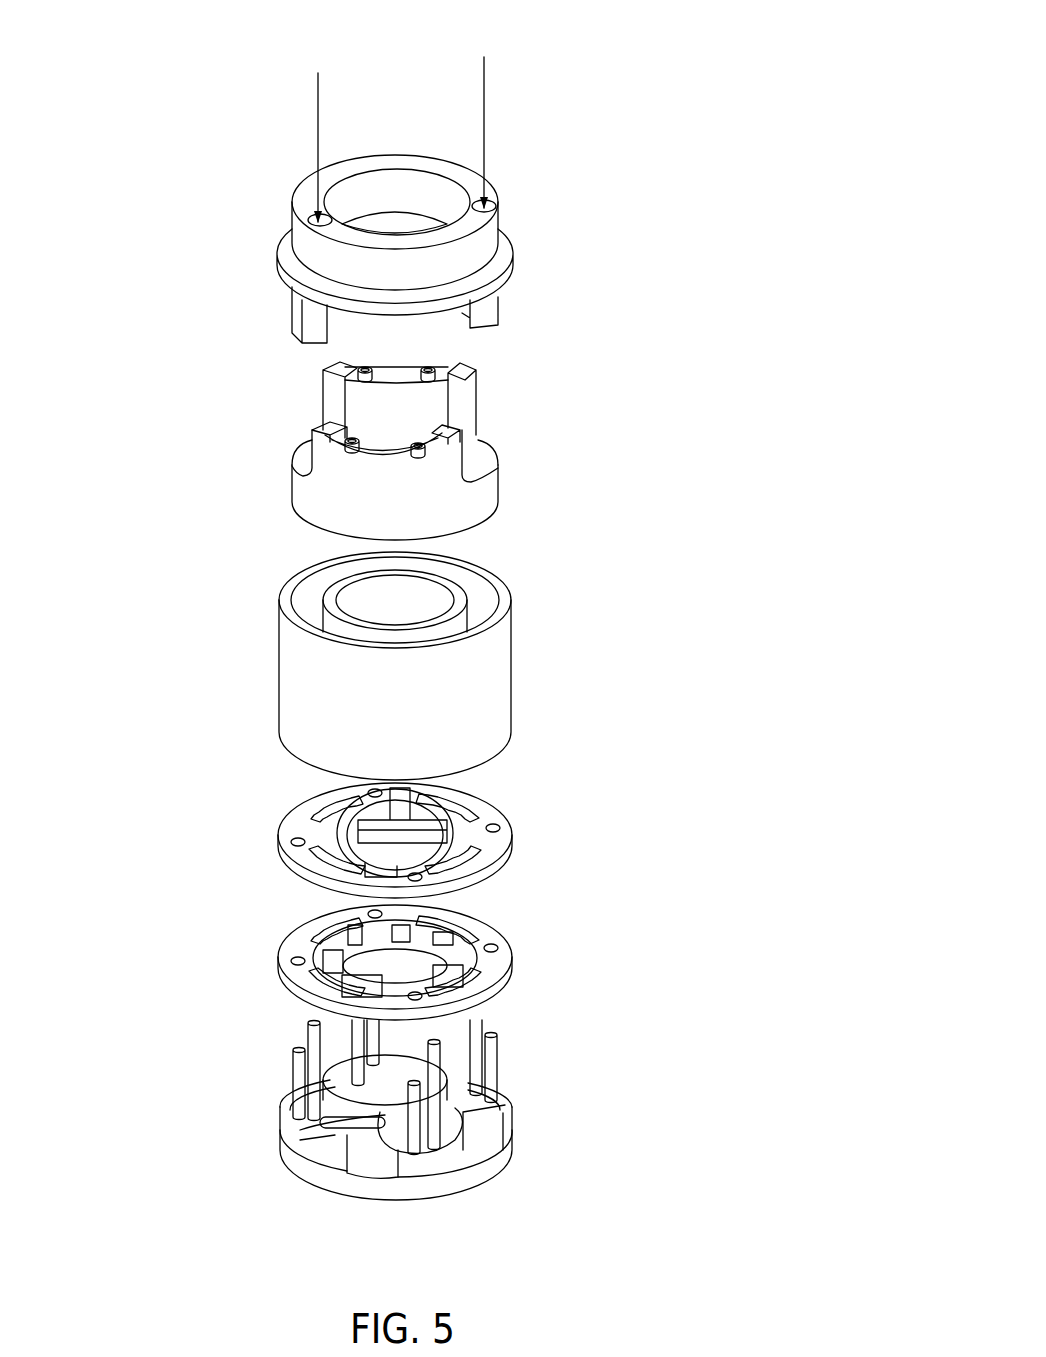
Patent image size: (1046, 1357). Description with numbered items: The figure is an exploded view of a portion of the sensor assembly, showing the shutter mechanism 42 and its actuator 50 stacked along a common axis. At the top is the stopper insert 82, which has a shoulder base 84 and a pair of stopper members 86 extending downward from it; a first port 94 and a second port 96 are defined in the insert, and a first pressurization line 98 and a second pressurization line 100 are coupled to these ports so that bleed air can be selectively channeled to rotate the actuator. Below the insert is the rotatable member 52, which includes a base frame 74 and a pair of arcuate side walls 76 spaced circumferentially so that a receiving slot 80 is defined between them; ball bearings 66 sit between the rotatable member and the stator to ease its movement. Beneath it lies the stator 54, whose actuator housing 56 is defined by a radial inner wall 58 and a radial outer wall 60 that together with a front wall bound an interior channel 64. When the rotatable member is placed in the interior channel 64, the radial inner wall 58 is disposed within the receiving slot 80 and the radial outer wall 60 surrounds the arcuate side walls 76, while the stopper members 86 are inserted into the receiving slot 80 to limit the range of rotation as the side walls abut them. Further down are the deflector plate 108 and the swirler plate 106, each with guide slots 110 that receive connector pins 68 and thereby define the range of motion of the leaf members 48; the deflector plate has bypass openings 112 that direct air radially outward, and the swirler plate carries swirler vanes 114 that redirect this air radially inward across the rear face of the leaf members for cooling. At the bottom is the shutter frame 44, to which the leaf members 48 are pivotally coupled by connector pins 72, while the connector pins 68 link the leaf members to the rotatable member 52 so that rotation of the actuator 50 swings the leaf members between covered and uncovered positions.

The shutter mechanism 42 is at (684, 53).
The shutter frame 44 is at (500, 1168).
The leaf members 48 is at (393, 1130).
The actuator 50 is at (660, 160).
The rotatable member 52 is at (520, 405).
The stator 54 is at (221, 268).
The actuator housing 56 is at (512, 662).
The radial inner wall 58 is at (447, 590).
The radial outer wall 60 is at (503, 602).
The interior channel 64 is at (310, 600).
The ball bearings 66 is at (352, 437).
The connector pins 68 is at (350, 1042).
The connector pins 72 is at (478, 1014).
The base frame 74 is at (482, 467).
The arcuate side walls 76 is at (452, 430).
The receiving slot 80 is at (479, 442).
The stopper insert 82 is at (532, 161).
The shoulder base 84 is at (513, 257).
The stopper members 86 is at (500, 300).
The first port 94 is at (300, 232).
The second port 96 is at (498, 213).
The first pressurization line 98 is at (318, 135).
The second pressurization line 100 is at (486, 98).
The swirler plate 106 is at (513, 960).
The deflector plate 108 is at (513, 838).
The guide slots 110 is at (312, 852).
The bypass openings 112 is at (394, 868).
The swirler vanes 114 is at (400, 926).